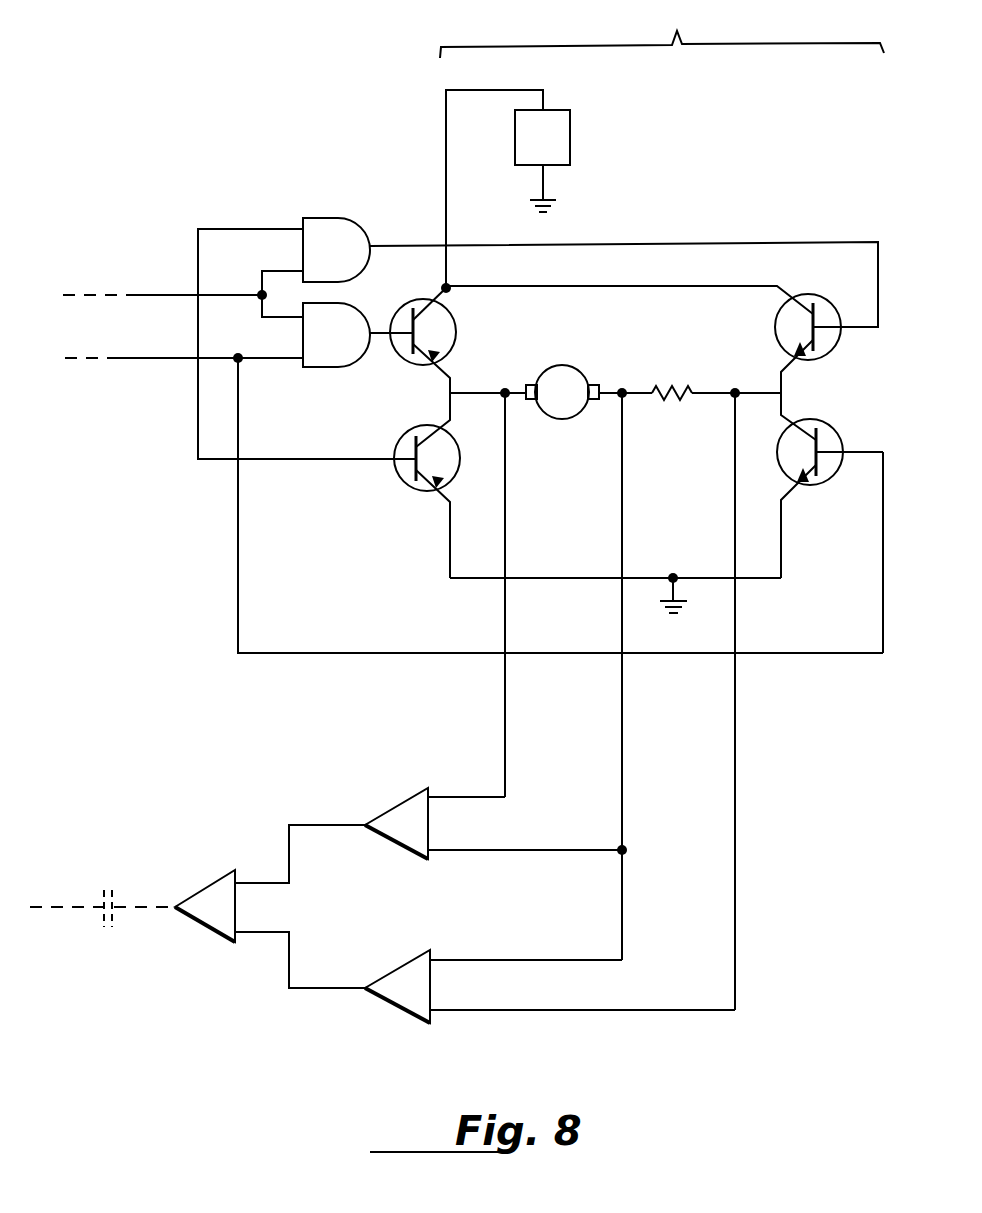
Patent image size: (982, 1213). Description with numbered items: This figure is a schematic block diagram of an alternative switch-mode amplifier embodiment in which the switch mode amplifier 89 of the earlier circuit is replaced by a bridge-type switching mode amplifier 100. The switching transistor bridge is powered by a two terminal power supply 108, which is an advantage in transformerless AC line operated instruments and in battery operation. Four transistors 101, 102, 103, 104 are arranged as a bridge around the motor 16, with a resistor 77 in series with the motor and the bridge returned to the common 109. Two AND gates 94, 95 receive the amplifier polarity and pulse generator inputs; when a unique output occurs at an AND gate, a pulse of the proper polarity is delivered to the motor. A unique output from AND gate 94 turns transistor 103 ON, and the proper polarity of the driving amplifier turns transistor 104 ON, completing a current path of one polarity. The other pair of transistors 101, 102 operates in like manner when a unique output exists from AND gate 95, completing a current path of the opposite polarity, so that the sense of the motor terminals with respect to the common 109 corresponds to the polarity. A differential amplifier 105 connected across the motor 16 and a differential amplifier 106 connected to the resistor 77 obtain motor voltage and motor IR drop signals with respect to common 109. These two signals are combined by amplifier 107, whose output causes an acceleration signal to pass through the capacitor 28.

The switch mode amplifier 89 is at (662, 32).
The two terminal power supply 108 is at (560, 143).
The AND gate 94 is at (340, 228).
The AND gate 95 is at (345, 362).
The transistor 101 is at (445, 330).
The transistor 102 is at (828, 438).
The transistor 103 is at (787, 326).
The transistor 104 is at (405, 483).
The motor 16 is at (565, 377).
The bridge-type switching mode amplifier 100 is at (545, 470).
The resistor 77 is at (683, 402).
The common 109 is at (675, 573).
The differential amplifier 105 is at (405, 813).
The differential amplifier 106 is at (408, 1000).
The amplifier 107 is at (208, 898).
The capacitor 28 is at (115, 920).